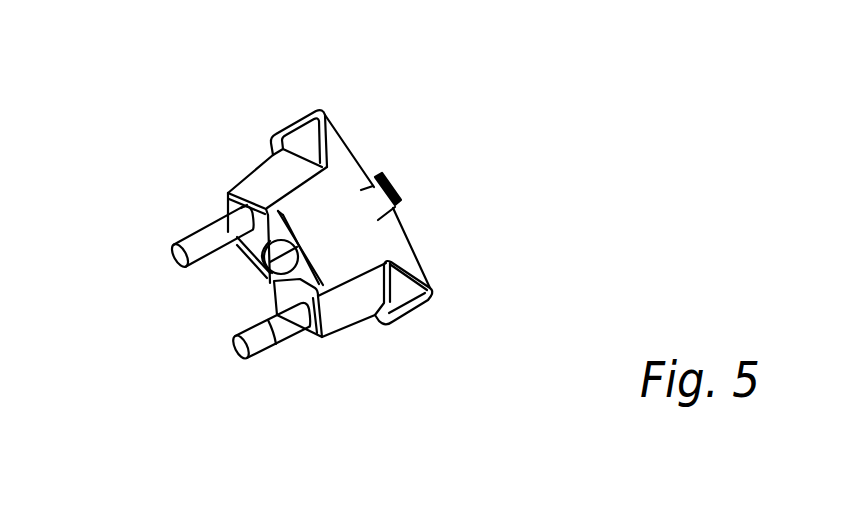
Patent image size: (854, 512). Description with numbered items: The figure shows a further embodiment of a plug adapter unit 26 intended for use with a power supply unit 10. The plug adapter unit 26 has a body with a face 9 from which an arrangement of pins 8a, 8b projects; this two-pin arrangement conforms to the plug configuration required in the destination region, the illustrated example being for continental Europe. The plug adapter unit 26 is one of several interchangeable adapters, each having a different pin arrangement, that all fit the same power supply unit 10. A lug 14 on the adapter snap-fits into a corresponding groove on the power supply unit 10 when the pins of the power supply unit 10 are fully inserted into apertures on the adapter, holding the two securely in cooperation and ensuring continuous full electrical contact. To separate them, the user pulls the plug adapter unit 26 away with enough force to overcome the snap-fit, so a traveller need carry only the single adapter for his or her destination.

The plug adapter unit 26 is at (336, 244).
The power supply unit 10 is at (344, 168).
The lug 14 is at (373, 185).
The face 9 is at (236, 208).
The pin 8a is at (201, 247).
The pin 8b is at (258, 337).